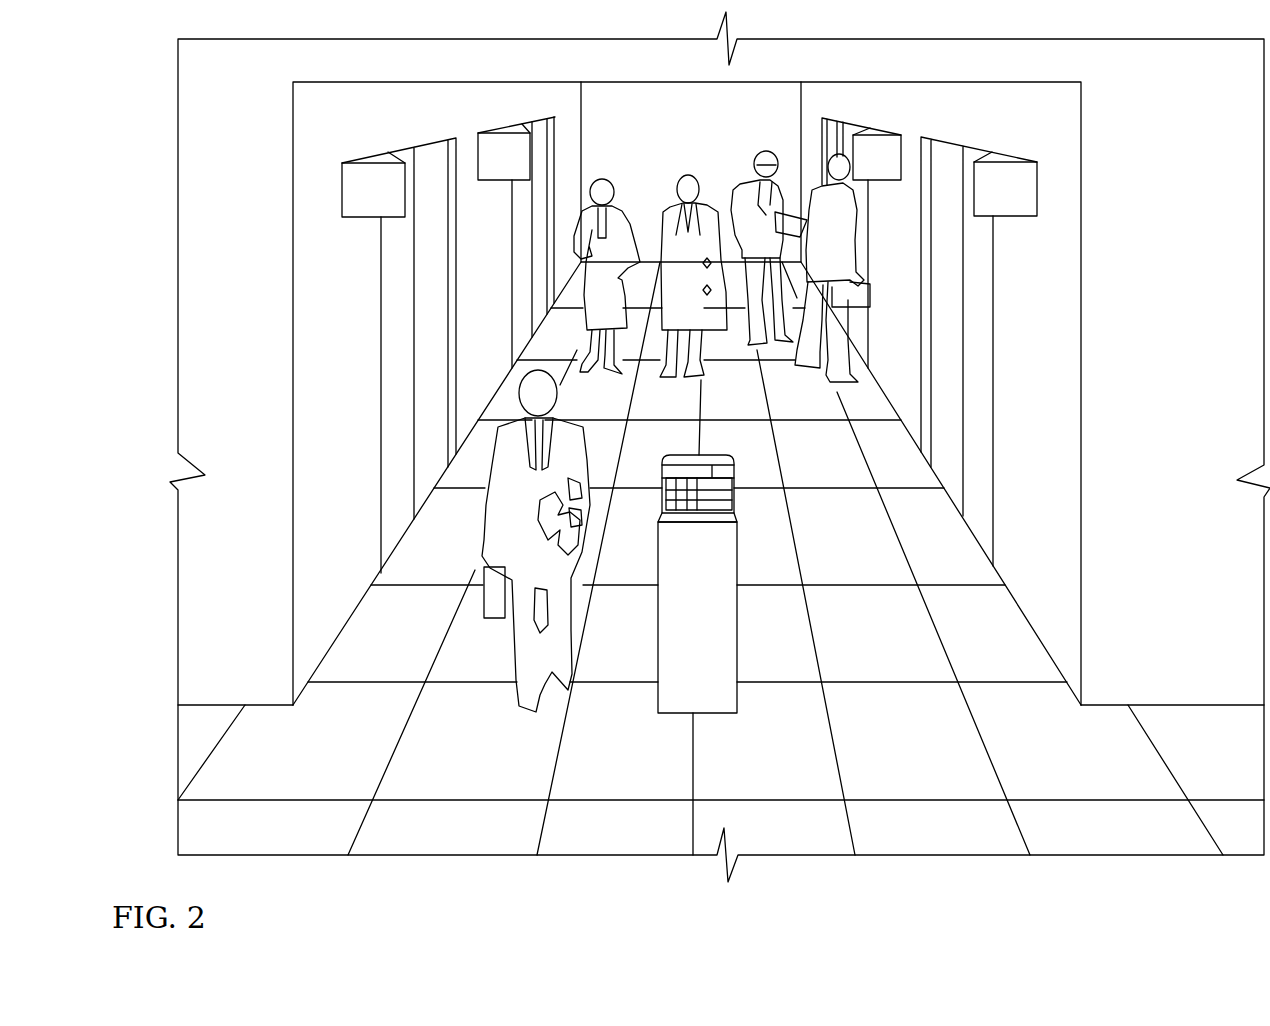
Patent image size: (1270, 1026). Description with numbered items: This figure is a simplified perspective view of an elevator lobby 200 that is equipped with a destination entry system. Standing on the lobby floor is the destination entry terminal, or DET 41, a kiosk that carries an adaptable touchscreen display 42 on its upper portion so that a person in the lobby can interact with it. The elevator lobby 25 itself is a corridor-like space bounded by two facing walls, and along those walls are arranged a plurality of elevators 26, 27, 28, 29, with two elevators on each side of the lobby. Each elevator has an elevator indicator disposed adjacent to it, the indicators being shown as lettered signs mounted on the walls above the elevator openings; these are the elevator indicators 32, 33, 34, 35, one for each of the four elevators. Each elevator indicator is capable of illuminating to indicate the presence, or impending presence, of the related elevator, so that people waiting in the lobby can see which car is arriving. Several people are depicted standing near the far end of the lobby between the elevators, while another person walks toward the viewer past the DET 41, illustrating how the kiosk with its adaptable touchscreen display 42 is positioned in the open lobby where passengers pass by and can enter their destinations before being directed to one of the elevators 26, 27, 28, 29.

The elevator lobby 200 is at (1170, 106).
The elevator lobby 25 is at (665, 148).
The elevator 26 is at (398, 465).
The elevator 27 is at (523, 296).
The elevator 28 is at (843, 143).
The elevator 29 is at (978, 487).
The elevator indicator 32 is at (372, 162).
The elevator indicator 33 is at (503, 133).
The elevator indicator 34 is at (878, 110).
The sign D 35 is at (1012, 159).
The destination entry terminal 41 is at (740, 620).
The adaptable touchscreen display 42 is at (710, 458).